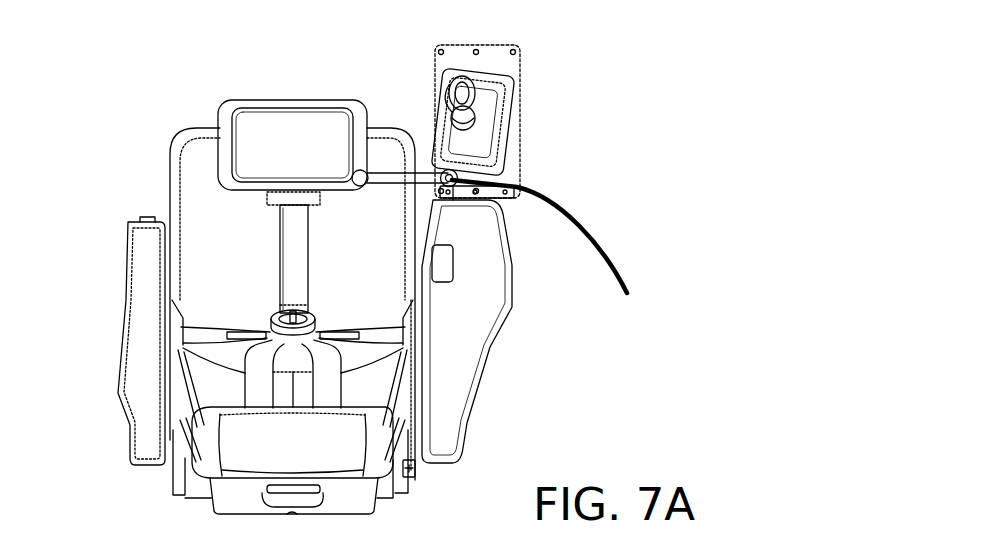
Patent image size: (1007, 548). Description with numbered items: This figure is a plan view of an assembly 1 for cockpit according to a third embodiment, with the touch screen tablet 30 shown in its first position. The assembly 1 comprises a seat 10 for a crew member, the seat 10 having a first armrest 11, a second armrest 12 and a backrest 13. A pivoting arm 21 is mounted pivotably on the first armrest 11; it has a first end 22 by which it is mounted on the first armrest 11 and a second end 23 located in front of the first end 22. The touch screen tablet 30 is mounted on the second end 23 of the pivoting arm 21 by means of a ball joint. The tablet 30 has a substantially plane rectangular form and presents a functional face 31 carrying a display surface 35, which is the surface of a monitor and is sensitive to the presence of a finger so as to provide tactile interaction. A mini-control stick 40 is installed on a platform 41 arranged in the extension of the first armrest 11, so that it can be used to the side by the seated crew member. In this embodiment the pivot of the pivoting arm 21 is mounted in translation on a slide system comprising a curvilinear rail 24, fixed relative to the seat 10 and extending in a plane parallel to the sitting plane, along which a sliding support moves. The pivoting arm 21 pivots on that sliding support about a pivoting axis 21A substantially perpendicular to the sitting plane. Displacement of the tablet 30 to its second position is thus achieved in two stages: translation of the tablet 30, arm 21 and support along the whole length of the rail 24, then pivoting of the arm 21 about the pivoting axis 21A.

The assembly for cockpit 1 is at (120, 98).
The seat 10 is at (195, 154).
The first armrest 11 is at (453, 388).
The second armrest 12 is at (133, 348).
The backrest 13 is at (353, 465).
The pivoting arm 21 is at (420, 178).
The pivoting axis 21A is at (517, 185).
The first end 22 is at (449, 184).
The second end 23 is at (365, 172).
The rail 24 is at (568, 215).
The touch screen tablet 30 is at (315, 117).
The functional face 31 is at (252, 118).
The display surface 35 is at (233, 117).
The mini-control stick 40 is at (480, 107).
The platform 41 is at (493, 52).